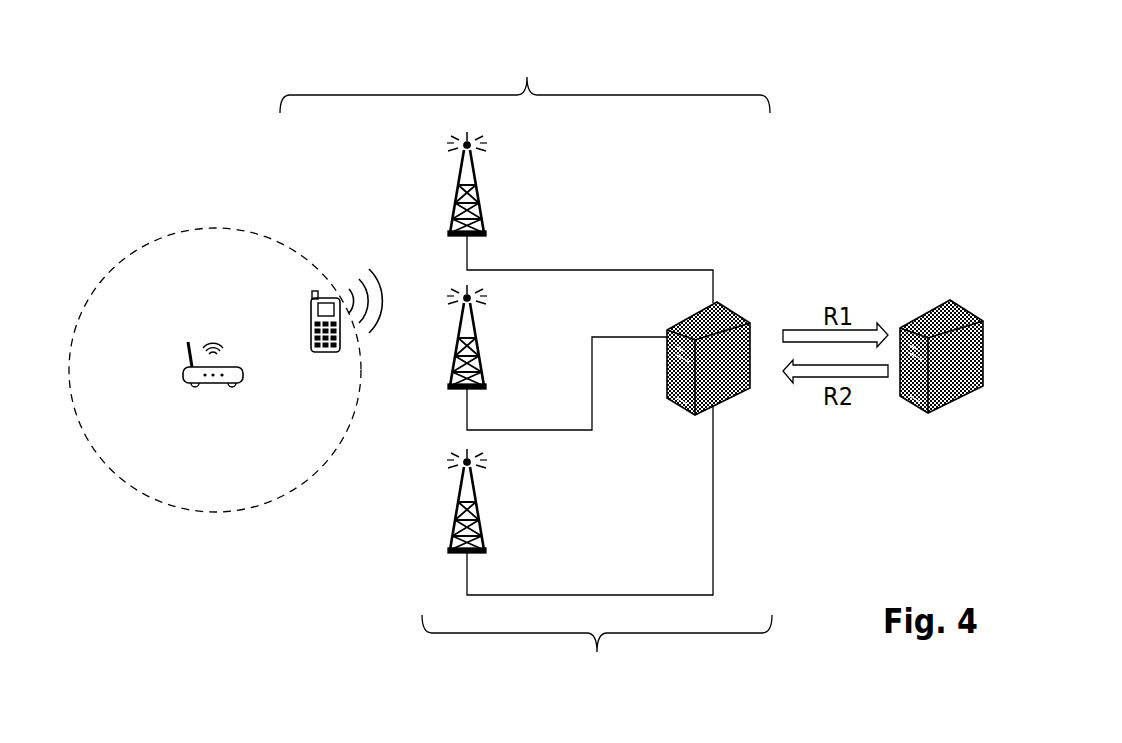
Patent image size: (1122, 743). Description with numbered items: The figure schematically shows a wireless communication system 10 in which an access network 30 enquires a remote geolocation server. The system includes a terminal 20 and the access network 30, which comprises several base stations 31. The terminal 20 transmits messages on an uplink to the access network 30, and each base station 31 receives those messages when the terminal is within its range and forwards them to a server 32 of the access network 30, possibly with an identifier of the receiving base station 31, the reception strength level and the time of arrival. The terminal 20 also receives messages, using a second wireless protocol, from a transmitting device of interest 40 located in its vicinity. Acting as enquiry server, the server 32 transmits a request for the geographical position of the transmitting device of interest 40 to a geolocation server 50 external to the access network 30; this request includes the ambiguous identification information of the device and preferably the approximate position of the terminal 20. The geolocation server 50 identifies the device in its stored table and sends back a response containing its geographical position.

The wireless communication system 10 is at (525, 79).
The terminal 20 is at (312, 318).
The access network 30 is at (597, 654).
The base station 31 is at (478, 208).
The server 32 is at (740, 395).
The transmitting device of interest 40 is at (183, 369).
The geolocation server 50 is at (950, 300).